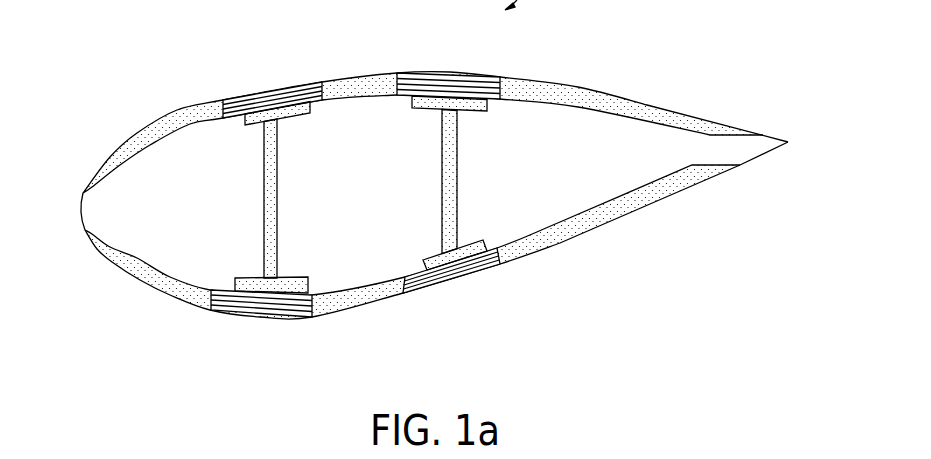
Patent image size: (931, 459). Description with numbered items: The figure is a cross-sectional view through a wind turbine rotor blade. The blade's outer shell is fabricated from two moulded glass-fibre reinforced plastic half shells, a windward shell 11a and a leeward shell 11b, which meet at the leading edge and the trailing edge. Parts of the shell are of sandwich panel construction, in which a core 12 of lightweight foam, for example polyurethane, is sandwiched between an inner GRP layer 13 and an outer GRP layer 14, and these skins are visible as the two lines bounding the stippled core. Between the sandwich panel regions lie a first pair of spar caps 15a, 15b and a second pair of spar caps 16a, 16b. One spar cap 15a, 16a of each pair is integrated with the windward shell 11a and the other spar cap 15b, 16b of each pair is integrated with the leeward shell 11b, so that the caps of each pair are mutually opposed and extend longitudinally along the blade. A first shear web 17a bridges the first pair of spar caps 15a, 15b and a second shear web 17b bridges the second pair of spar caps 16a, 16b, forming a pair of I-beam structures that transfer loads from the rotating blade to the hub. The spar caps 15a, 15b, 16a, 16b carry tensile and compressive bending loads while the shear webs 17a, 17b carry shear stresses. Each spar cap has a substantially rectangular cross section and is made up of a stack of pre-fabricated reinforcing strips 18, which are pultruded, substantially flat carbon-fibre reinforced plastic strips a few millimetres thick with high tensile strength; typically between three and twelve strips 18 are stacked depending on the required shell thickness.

The windward shell 11a is at (436, 251).
The leeward shell 11b is at (578, 88).
The core 12 is at (336, 303).
The inner GRP layer 13 is at (363, 283).
The outer GRP layer 14 is at (384, 300).
The spar cap 15a is at (267, 320).
The spar cap 15b is at (262, 92).
The spar cap 16a is at (458, 283).
The spar cap 16b is at (433, 73).
The first shear web 17a is at (263, 197).
The second shear web 17b is at (458, 177).
The reinforcing strips 18 is at (463, 83).